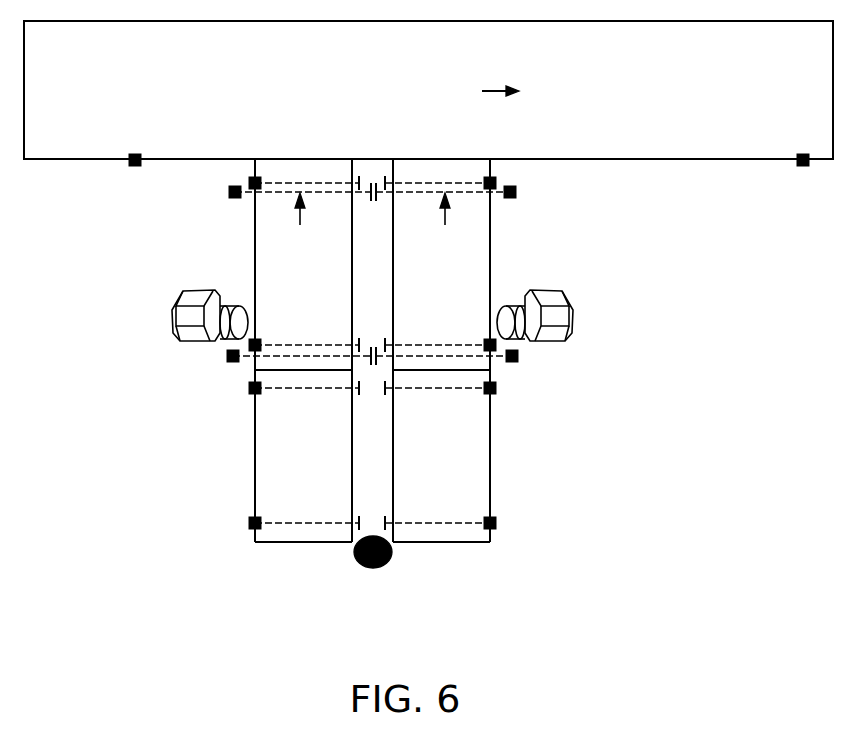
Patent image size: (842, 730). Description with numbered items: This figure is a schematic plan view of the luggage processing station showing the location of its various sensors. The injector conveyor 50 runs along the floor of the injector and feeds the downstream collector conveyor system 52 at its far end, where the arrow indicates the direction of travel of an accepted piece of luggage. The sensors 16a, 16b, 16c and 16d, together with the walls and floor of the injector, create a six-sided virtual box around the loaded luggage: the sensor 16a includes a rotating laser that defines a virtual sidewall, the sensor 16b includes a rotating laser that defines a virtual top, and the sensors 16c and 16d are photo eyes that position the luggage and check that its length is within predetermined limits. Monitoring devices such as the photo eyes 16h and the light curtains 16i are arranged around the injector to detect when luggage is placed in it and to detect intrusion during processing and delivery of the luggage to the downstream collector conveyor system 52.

The sensor 16a is at (171, 318).
The sensor 16b is at (375, 568).
The sensor 16c is at (248, 523).
The sensor 16d is at (248, 392).
The photo eyes 16h is at (137, 168).
The light curtains 16i is at (232, 196).
The injector conveyor 50 is at (255, 460).
The downstream collector conveyor system 52 is at (724, 160).